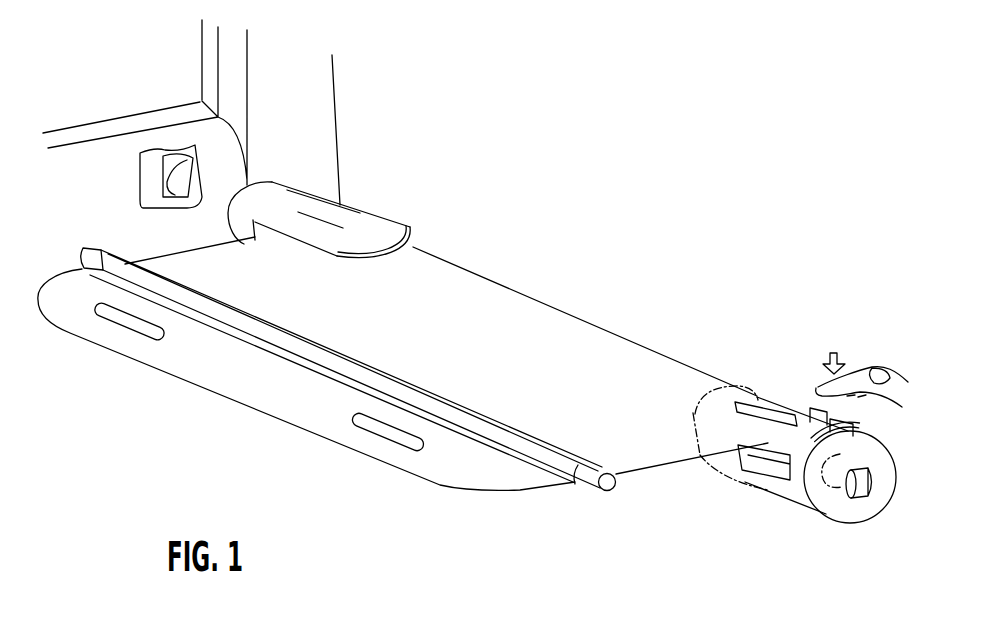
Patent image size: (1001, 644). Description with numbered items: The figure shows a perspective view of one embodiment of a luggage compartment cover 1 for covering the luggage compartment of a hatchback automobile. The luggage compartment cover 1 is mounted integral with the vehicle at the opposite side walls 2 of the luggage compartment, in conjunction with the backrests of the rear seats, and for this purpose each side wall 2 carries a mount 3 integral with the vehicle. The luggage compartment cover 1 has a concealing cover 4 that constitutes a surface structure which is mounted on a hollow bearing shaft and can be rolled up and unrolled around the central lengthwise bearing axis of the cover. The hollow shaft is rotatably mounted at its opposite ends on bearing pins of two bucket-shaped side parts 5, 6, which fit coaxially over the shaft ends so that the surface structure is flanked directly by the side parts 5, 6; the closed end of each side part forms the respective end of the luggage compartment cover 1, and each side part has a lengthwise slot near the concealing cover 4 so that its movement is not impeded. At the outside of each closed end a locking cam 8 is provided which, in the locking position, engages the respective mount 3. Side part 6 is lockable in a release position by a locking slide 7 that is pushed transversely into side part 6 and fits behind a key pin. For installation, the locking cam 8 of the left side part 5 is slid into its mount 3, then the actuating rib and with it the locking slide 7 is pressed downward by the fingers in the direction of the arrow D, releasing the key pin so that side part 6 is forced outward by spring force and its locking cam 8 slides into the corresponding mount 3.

The luggage compartment cover 1 is at (450, 225).
The side wall 2 is at (80, 197).
The mount 3 is at (173, 143).
The concealing cover 4 is at (510, 350).
The side part 5 is at (343, 222).
The side part 6 is at (768, 410).
The locking slide 7 is at (786, 458).
The locking cam 8 is at (853, 488).
The direction of arrow D is at (850, 353).